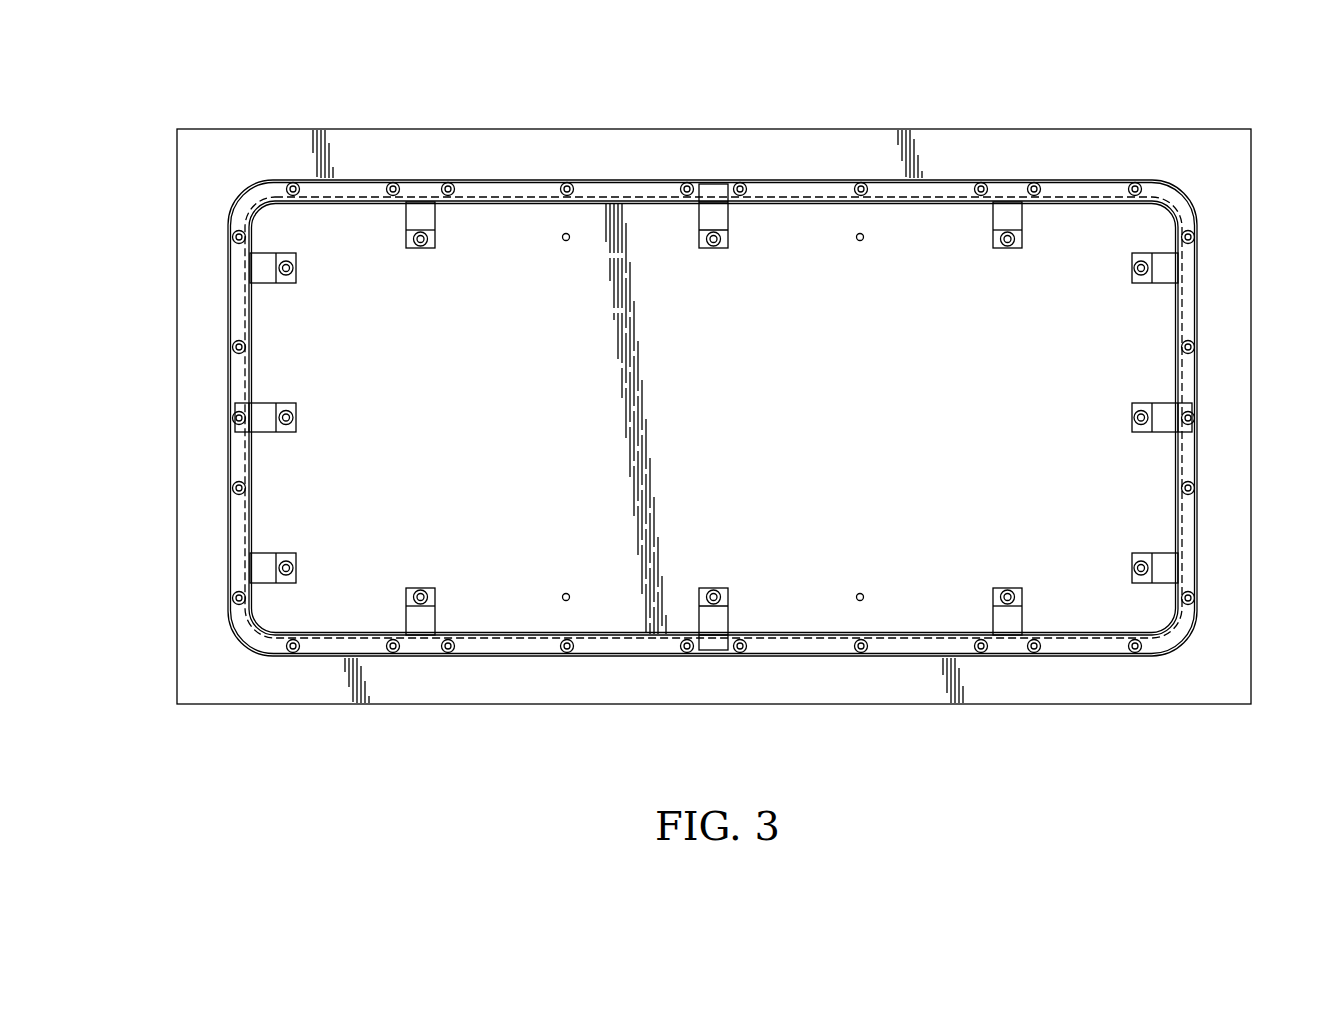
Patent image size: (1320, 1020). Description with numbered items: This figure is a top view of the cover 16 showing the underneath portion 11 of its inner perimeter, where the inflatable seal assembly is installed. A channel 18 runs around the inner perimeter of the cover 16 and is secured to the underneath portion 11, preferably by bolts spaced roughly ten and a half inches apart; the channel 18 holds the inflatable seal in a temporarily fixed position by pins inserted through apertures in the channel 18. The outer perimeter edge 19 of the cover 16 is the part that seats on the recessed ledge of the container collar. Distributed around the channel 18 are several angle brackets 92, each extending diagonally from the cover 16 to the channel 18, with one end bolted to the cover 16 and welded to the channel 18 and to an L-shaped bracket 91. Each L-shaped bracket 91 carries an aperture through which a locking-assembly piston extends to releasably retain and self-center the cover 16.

The underneath portion 11 is at (788, 419).
The cover 16 is at (1070, 152).
The channel 18 is at (497, 190).
The perimeter edge 19 is at (333, 128).
The L-shaped bracket 91 is at (712, 190).
The angle bracket 92 is at (430, 215).